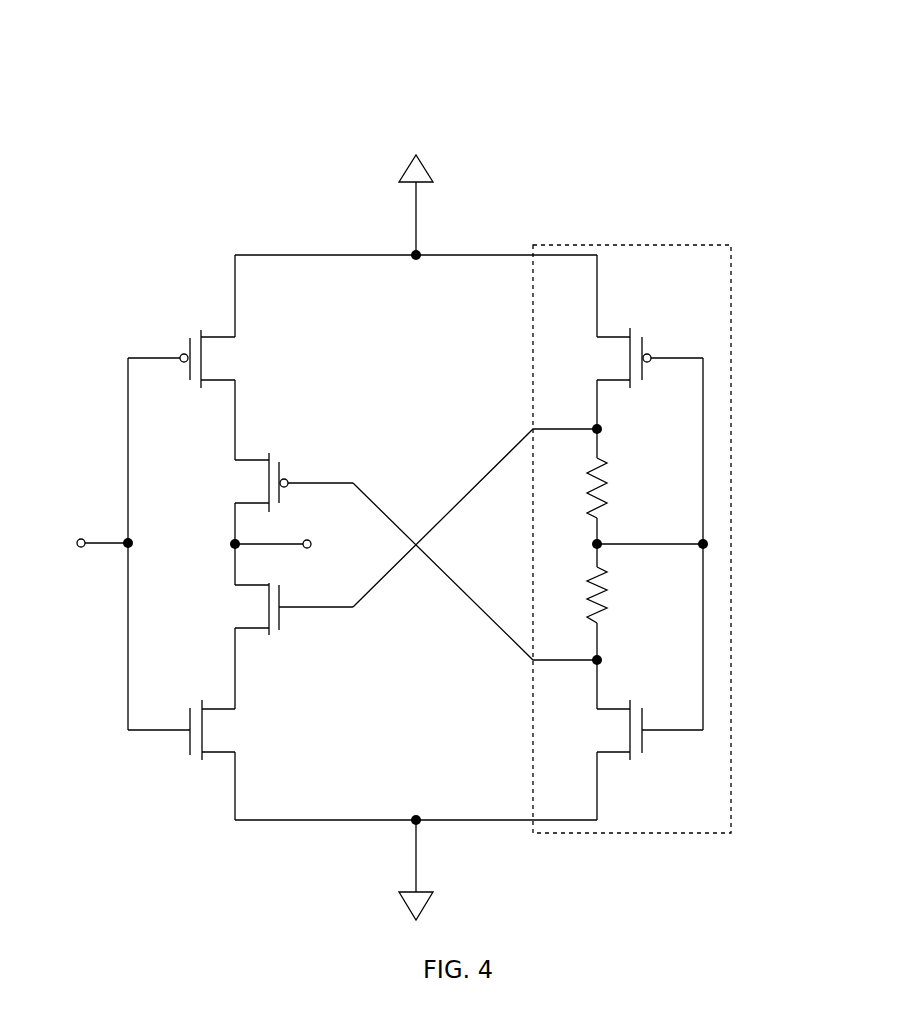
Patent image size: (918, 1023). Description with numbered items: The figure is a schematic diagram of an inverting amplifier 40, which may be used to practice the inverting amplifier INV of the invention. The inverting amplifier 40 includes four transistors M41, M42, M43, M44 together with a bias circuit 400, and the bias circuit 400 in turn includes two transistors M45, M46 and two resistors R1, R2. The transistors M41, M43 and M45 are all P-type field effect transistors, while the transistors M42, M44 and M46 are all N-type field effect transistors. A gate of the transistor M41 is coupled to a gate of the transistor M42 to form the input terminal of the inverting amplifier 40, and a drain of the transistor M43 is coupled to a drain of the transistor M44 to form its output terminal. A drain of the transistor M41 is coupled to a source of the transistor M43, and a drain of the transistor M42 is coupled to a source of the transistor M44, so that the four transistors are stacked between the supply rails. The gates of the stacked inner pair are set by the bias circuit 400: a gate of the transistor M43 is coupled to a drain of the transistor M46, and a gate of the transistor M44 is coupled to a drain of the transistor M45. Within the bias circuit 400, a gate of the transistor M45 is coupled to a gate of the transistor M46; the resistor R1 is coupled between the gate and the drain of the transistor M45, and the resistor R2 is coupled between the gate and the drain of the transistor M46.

The inverting amplifier 40 is at (456, 470).
The bias circuit 400 is at (632, 499).
The transistor M41 is at (204, 359).
The transistor M42 is at (204, 730).
The transistor M43 is at (275, 482).
The transistor M44 is at (275, 609).
The transistor M45 is at (627, 358).
The transistor M46 is at (627, 730).
The resistor R1 is at (617, 488).
The resistor R2 is at (617, 595).